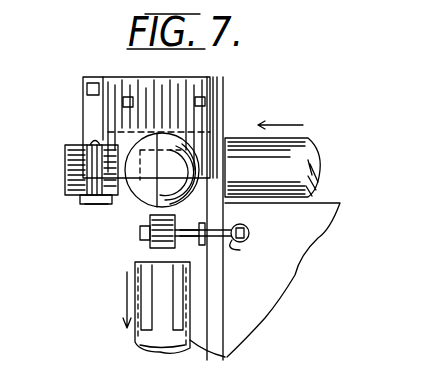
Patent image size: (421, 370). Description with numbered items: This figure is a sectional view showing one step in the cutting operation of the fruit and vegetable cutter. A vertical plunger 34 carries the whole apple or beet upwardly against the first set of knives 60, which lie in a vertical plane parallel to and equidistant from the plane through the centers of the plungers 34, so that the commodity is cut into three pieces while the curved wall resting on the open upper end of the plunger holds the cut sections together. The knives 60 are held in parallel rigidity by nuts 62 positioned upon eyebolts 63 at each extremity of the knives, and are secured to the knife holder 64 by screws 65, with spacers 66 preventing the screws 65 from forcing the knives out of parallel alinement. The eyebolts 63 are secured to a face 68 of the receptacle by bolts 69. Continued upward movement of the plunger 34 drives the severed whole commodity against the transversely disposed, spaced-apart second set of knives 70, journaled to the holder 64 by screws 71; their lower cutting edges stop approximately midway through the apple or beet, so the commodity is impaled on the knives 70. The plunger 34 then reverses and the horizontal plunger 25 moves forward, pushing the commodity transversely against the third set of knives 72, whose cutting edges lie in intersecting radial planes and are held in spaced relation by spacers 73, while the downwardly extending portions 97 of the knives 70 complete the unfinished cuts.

The horizontal plunger 25 is at (293, 150).
The vertical plunger 34 is at (135, 334).
The first set of knives 60 is at (160, 245).
The nut 62 is at (197, 245).
The eyebolt 63 is at (215, 240).
The knife holder 64 is at (223, 86).
The screw 65 is at (146, 233).
The spacer 66 is at (152, 217).
The face of receptacle 68 is at (285, 278).
The bolt 69 is at (250, 233).
The second set of knives 70 is at (197, 113).
The screw 71 is at (197, 97).
The third set of knives 72 is at (77, 193).
The spacer 73 is at (83, 200).
The downwardly extending portion 97 is at (107, 198).